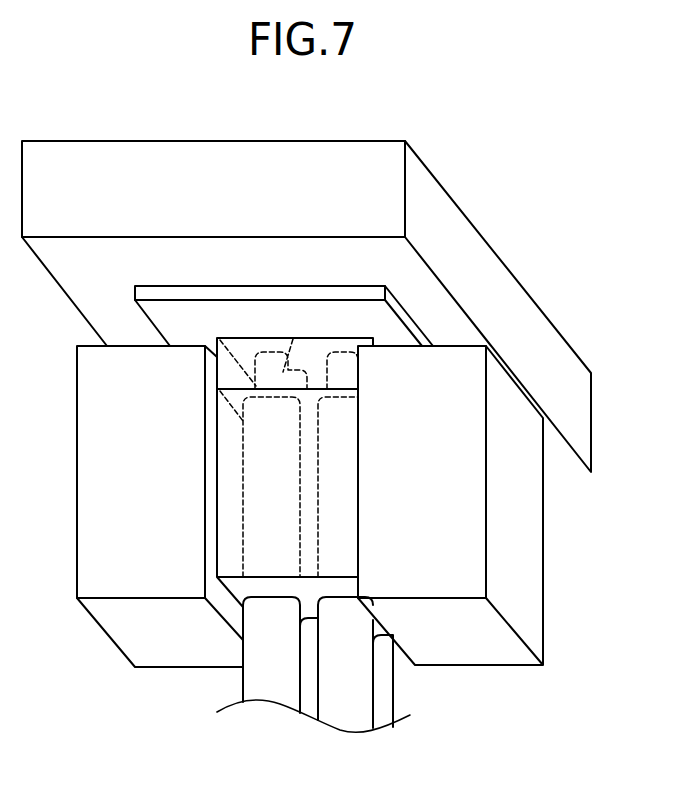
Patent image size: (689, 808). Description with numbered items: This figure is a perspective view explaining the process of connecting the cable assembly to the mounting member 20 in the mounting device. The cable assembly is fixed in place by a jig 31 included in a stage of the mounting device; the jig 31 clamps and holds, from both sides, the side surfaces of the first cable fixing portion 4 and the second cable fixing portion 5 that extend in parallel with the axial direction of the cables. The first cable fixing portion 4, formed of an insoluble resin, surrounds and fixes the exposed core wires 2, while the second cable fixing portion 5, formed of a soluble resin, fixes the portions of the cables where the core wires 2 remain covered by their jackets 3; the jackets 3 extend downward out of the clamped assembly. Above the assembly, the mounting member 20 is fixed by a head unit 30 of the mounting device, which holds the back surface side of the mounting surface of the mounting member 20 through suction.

The core wire 2 is at (293, 338).
The jacket 3 is at (352, 681).
The first cable fixing portion 4 is at (234, 338).
The second cable fixing portion 5 is at (314, 389).
The mounting member 20 is at (278, 288).
The head unit 30 is at (458, 206).
The jig 31 is at (522, 578).